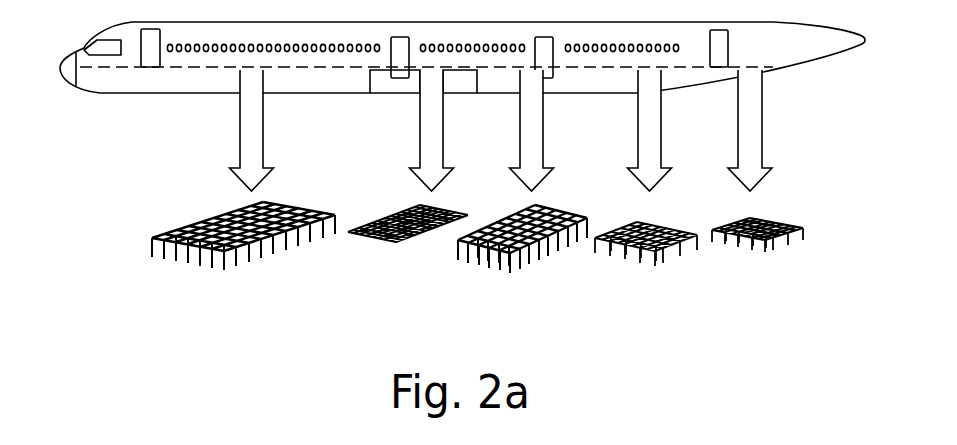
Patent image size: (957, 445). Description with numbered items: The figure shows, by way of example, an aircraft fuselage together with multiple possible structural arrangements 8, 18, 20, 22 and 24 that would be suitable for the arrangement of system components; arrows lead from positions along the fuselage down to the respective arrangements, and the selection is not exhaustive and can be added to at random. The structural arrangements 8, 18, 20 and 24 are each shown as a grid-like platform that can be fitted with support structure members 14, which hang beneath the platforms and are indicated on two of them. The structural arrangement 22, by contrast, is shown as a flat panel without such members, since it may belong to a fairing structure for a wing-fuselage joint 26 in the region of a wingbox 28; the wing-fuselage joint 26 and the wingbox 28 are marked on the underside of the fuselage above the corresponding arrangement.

The structural arrangement 8 is at (775, 222).
The support structure members 14 is at (228, 265).
The structural arrangement 18 is at (668, 258).
The structural arrangement 20 is at (538, 255).
The structural arrangement 22 is at (392, 245).
The structural arrangement 24 is at (195, 253).
The wing-fuselage joint 26 is at (397, 99).
The wingbox 28 is at (452, 83).